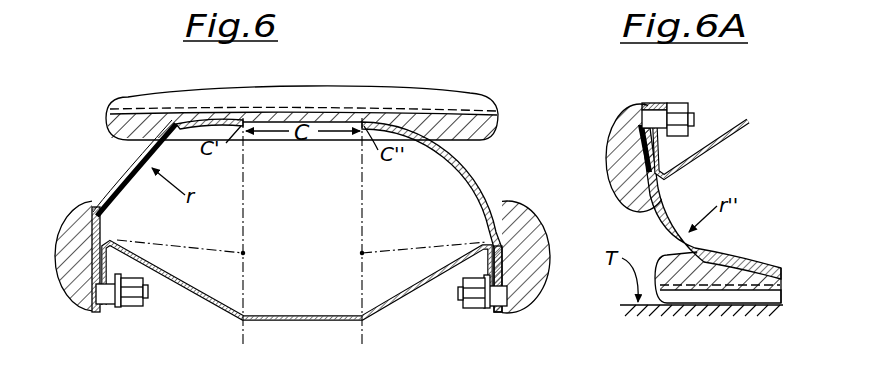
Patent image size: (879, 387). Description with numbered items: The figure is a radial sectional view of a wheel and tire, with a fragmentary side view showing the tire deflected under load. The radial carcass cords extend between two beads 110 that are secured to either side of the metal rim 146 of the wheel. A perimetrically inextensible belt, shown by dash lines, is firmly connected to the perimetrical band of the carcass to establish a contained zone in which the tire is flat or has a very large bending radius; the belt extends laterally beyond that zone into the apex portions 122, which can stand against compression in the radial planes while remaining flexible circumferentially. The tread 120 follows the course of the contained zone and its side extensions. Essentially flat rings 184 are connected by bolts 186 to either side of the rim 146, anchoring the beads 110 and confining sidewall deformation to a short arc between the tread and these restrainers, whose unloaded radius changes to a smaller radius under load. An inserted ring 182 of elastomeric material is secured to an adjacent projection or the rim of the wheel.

In FIG. 6, the bead 110 is at (98, 313).
In FIG. 6A, the bead 110 is at (643, 112).
In FIG. 6, the tread 120 is at (388, 98).
In FIG. 6A, the tread 120 is at (727, 297).
In FIG. 6, the apex portion 122 is at (110, 110).
In FIG. 6A, the apex portion 122 is at (660, 303).
In FIG. 6, the rim 146 is at (286, 320).
In FIG. 6A, the rim 146 is at (744, 130).
In FIG. 6, the inserted ring 182 is at (72, 278).
In FIG. 6A, the inserted ring 182 is at (622, 152).
In FIG. 6, the flat ring 184 is at (93, 200).
In FIG. 6A, the flat ring 184 is at (634, 206).
In FIG. 6, the bolt 186 is at (508, 313).
In FIG. 6A, the bolt 186 is at (653, 104).